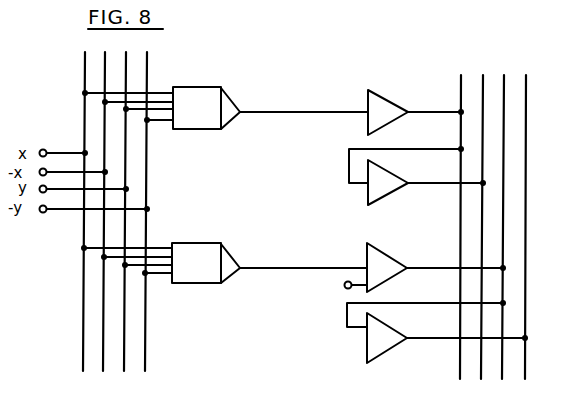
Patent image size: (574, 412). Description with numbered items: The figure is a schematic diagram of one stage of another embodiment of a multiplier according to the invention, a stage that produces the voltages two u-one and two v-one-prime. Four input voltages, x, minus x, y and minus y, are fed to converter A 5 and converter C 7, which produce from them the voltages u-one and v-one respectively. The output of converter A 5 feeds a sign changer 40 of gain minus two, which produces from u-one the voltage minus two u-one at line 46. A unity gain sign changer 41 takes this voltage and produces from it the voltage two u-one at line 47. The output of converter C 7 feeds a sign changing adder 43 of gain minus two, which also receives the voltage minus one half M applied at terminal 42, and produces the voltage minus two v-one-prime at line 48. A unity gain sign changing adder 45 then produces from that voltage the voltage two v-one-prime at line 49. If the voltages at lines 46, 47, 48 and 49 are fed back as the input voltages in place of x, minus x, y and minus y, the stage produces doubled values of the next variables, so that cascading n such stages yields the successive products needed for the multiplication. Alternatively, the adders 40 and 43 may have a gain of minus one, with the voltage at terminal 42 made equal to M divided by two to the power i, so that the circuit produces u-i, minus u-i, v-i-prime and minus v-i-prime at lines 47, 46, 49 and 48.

The converter A 5 is at (225, 102).
The converter C 7 is at (224, 256).
The sign changer 40 is at (416, 107).
The unity gain sign changer 41 is at (417, 175).
The terminal 42 is at (343, 286).
The sign changing adder 43 is at (436, 266).
The unity gain sign changing adder 45 is at (437, 331).
The line 46 is at (455, 218).
The line 47 is at (482, 218).
The line 48 is at (505, 218).
The line 49 is at (527, 219).